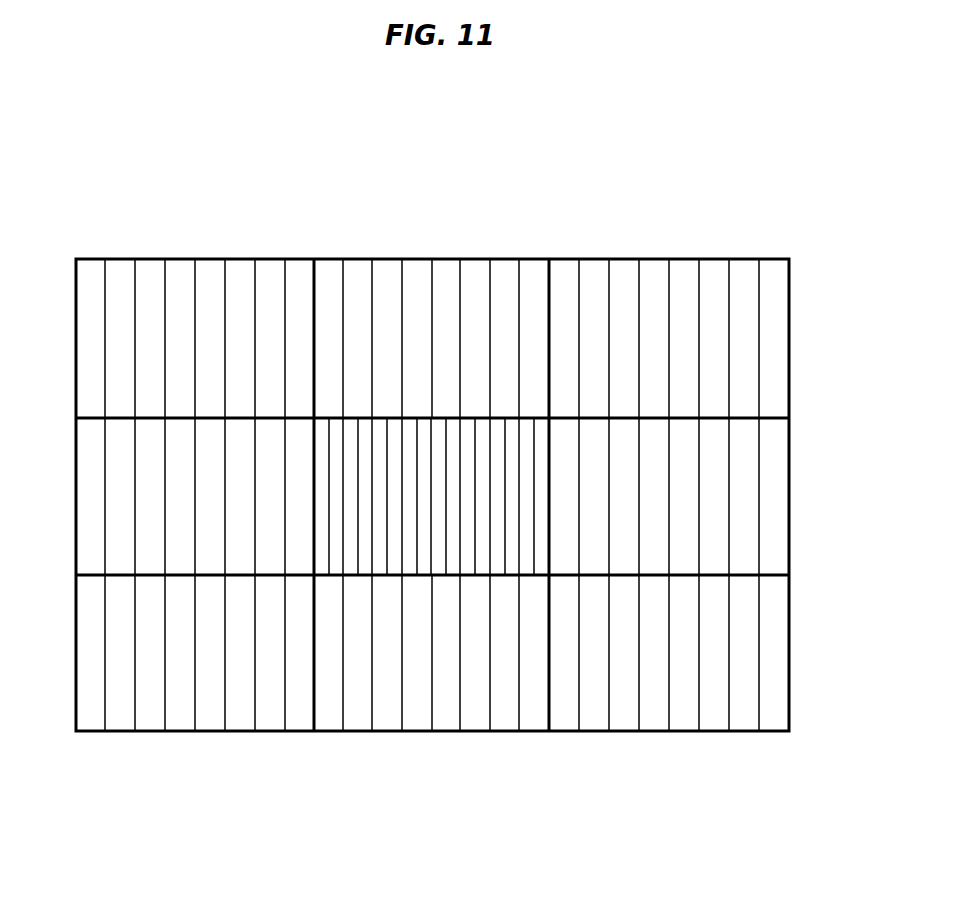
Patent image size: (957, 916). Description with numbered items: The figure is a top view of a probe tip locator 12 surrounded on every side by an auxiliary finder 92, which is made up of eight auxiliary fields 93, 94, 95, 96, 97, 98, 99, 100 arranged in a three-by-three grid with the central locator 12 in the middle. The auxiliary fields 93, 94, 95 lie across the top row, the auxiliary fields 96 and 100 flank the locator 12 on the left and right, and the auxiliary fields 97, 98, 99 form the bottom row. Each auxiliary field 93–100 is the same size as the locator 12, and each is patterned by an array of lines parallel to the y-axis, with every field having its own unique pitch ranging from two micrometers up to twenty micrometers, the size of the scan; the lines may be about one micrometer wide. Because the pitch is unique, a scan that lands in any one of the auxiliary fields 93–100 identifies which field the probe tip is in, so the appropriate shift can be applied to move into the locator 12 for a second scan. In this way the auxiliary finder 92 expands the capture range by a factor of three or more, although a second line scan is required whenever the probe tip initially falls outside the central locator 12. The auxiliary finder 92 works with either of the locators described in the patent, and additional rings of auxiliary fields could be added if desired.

The auxiliary finder 92 is at (203, 100).
The locator 12 is at (497, 435).
The auxiliary field 93 is at (775, 342).
The auxiliary field 94 is at (444, 273).
The auxiliary field 95 is at (208, 273).
The auxiliary field 96 is at (82, 507).
The auxiliary field 97 is at (82, 664).
The auxiliary field 98 is at (358, 717).
The auxiliary field 99 is at (623, 717).
The auxiliary field 100 is at (775, 498).